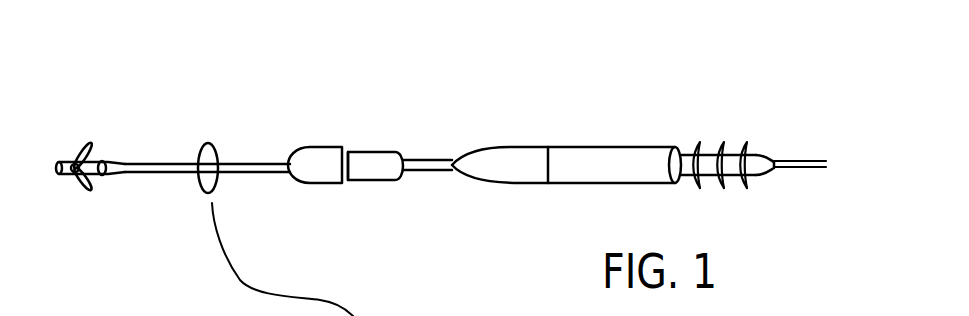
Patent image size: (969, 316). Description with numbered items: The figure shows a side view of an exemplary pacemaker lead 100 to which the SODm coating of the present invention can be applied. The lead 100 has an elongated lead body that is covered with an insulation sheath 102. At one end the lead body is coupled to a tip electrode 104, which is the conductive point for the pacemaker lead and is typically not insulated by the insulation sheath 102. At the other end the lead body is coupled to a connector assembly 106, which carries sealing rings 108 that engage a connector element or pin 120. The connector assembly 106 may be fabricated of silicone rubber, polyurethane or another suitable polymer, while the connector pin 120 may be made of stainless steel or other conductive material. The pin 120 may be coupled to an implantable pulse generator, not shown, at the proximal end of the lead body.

The pacemaker lead 100 is at (586, 73).
The insulation sheath 102 is at (247, 161).
The tip electrode 104 is at (126, 189).
The connector assembly 106 is at (608, 156).
The sealing rings 108 is at (744, 142).
The connector pin 120 is at (811, 160).